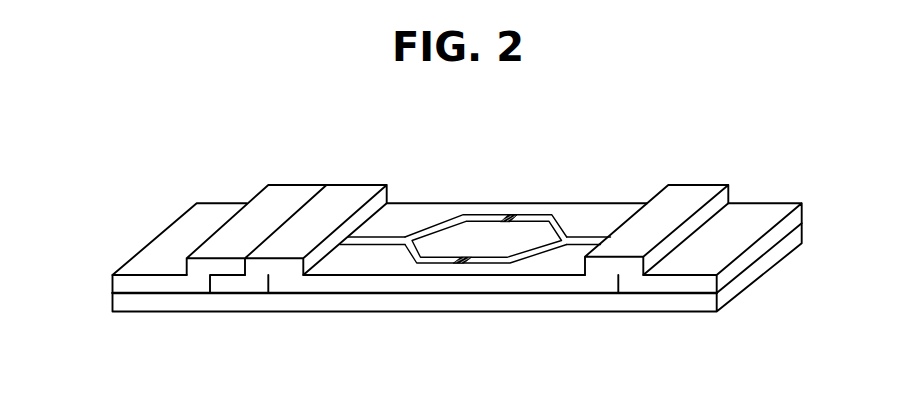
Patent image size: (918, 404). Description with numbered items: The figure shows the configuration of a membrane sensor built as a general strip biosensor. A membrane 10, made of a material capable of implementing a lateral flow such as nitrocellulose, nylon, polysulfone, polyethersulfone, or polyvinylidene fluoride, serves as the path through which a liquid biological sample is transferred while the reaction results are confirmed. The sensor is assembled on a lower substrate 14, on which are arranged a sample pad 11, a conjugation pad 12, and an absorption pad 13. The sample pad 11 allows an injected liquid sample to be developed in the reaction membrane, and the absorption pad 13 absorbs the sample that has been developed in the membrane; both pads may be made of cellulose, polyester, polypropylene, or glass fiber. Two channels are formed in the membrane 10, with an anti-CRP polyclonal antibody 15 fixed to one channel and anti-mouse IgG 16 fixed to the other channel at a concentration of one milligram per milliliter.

The membrane 10 is at (366, 284).
The sample pad 11 is at (210, 212).
The conjugation pad 12 is at (347, 200).
The absorption pad 13 is at (695, 192).
The lower substrate 14 is at (648, 302).
The anti-CRP polyclonal antibody 15 is at (514, 215).
The anti-mouse IgG 16 is at (462, 264).